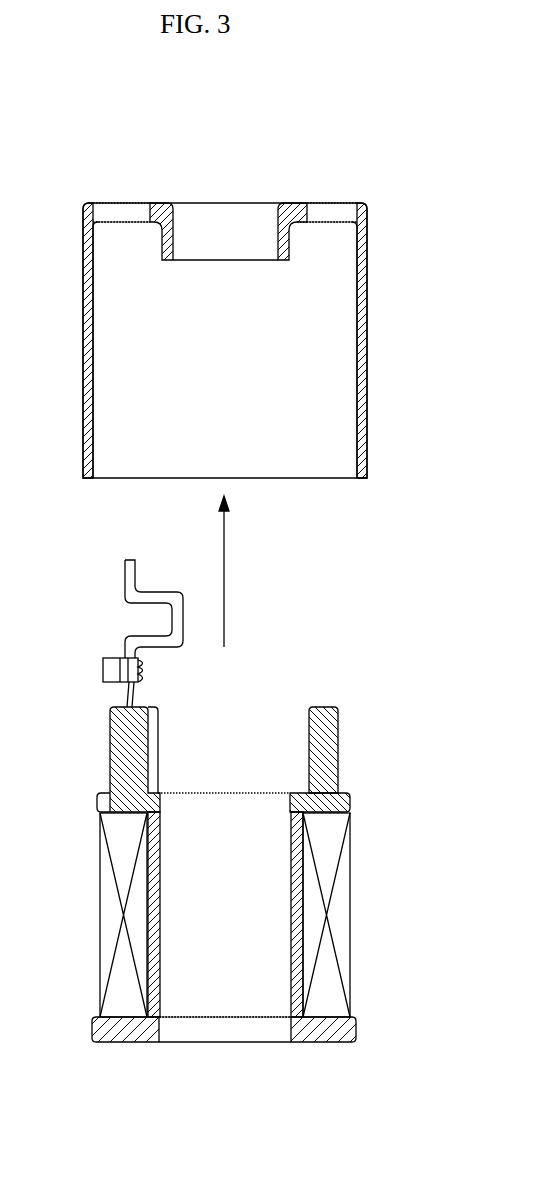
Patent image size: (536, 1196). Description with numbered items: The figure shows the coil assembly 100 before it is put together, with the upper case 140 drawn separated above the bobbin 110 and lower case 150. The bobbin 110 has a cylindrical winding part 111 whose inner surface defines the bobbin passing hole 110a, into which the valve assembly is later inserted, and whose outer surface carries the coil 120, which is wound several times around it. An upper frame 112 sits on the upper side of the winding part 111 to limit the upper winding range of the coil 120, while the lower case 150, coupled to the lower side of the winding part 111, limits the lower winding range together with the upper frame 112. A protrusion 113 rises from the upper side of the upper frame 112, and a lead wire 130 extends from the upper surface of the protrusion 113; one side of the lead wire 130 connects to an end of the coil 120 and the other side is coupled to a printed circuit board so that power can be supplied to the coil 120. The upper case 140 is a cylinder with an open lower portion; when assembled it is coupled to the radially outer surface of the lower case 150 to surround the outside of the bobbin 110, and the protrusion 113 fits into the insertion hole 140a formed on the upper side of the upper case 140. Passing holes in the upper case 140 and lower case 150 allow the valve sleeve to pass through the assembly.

The coil assembly 100 is at (100, 140).
The bobbin 110 is at (347, 730).
The bobbin passing hole 110a is at (228, 810).
The winding part 111 is at (298, 877).
The upper frame 112 is at (350, 800).
The protrusion 113 is at (122, 745).
The coil 120 is at (338, 907).
The lead wire 130 is at (153, 594).
The upper case 140 is at (367, 279).
The insertion hole 140a is at (130, 211).
The lower case 150 is at (348, 1030).